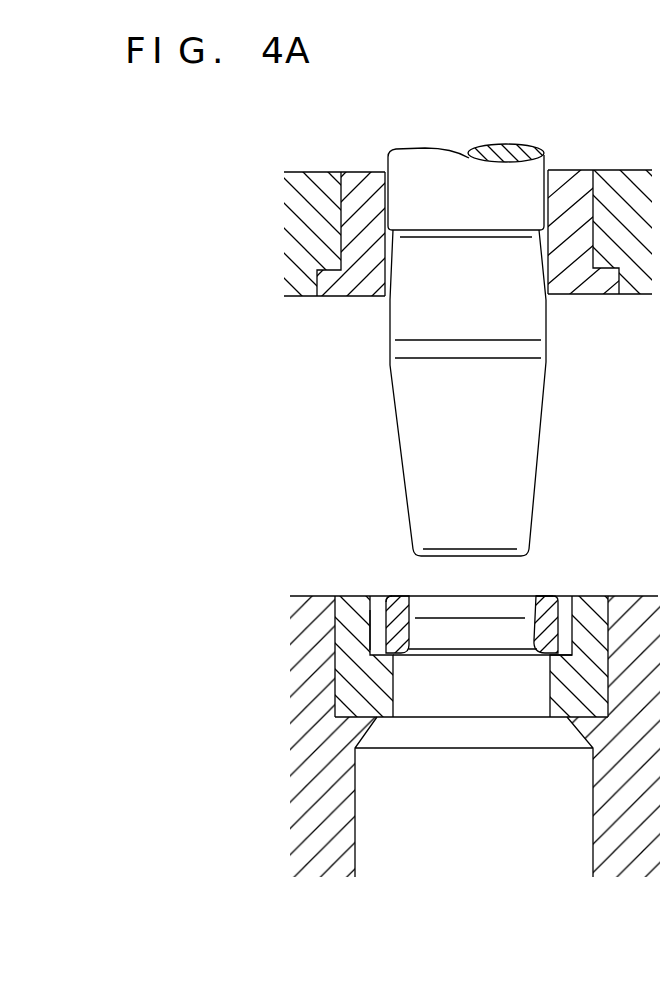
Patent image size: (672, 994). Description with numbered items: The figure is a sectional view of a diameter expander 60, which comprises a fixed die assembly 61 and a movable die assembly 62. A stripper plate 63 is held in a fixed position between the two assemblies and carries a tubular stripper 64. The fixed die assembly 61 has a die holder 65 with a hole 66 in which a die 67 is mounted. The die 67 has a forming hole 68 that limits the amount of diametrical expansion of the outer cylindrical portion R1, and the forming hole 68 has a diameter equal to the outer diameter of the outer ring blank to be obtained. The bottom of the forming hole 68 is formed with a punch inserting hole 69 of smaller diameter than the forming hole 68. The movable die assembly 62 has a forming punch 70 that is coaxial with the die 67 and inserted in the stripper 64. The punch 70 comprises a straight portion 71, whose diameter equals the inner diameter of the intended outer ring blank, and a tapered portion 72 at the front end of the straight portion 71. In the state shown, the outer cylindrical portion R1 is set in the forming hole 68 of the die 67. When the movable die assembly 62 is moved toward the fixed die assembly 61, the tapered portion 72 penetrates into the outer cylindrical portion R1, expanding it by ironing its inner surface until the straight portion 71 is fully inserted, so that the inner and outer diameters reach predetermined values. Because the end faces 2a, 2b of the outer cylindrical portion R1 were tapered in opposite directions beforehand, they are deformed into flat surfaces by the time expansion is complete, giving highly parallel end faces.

The expander 60 is at (438, 321).
The fixed die assembly 61 is at (420, 689).
The movable die assembly 62 is at (432, 233).
The stripper plate 63 is at (313, 224).
The tubular stripper 64 is at (353, 283).
The die holder 65 is at (314, 618).
The hole 66 is at (340, 597).
The die 67 is at (358, 598).
The forming hole 68 is at (375, 641).
The punch inserting hole 69 is at (437, 703).
The forming punch 70 is at (432, 172).
The straight portion 71 is at (538, 344).
The tapered portion 72 is at (515, 445).
The end face 2a is at (543, 655).
The end face 2b is at (547, 595).
The outer cylindrical portion R1 is at (397, 596).